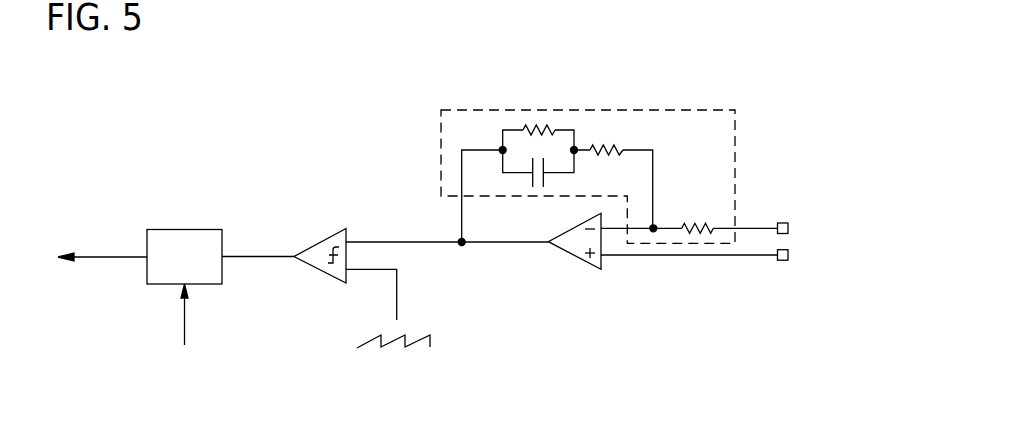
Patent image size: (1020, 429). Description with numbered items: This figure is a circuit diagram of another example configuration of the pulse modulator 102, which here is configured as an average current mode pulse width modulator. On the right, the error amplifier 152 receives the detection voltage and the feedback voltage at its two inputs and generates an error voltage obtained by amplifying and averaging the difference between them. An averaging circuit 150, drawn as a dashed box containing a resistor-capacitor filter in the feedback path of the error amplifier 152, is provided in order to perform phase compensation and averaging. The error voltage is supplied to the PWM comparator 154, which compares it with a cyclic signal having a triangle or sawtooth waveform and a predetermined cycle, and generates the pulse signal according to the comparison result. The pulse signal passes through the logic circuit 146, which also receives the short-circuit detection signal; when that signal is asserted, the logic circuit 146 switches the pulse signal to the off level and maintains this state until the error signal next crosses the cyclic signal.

The pulse modulator 102 is at (463, 394).
The logic circuit 146 is at (185, 230).
The averaging circuit 150 is at (650, 110).
The error amplifier 152 is at (573, 257).
The PWM comparator 154 is at (313, 267).